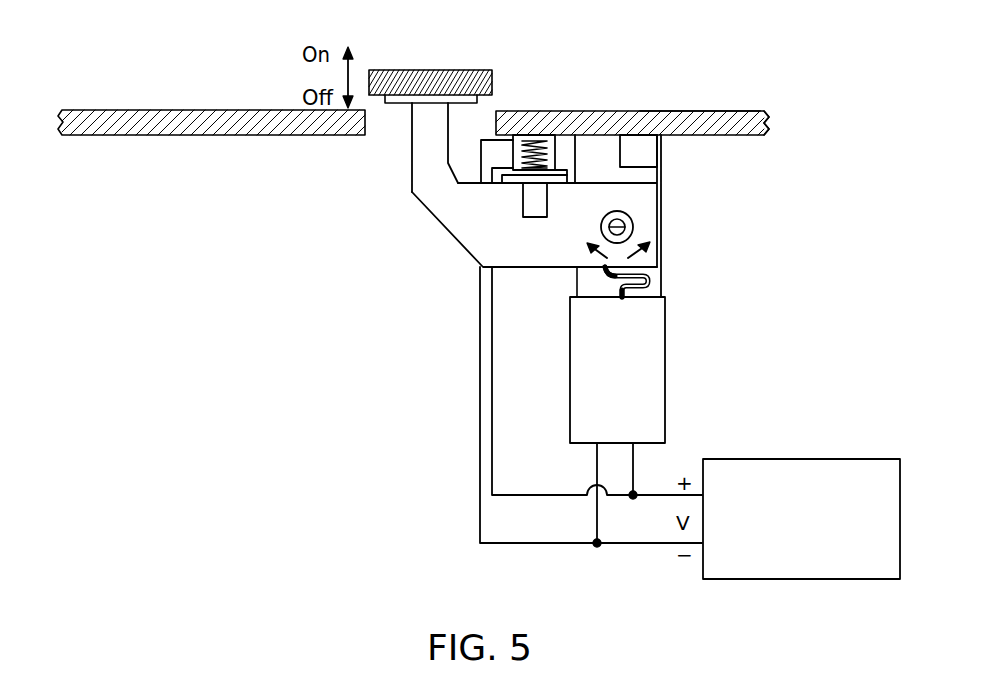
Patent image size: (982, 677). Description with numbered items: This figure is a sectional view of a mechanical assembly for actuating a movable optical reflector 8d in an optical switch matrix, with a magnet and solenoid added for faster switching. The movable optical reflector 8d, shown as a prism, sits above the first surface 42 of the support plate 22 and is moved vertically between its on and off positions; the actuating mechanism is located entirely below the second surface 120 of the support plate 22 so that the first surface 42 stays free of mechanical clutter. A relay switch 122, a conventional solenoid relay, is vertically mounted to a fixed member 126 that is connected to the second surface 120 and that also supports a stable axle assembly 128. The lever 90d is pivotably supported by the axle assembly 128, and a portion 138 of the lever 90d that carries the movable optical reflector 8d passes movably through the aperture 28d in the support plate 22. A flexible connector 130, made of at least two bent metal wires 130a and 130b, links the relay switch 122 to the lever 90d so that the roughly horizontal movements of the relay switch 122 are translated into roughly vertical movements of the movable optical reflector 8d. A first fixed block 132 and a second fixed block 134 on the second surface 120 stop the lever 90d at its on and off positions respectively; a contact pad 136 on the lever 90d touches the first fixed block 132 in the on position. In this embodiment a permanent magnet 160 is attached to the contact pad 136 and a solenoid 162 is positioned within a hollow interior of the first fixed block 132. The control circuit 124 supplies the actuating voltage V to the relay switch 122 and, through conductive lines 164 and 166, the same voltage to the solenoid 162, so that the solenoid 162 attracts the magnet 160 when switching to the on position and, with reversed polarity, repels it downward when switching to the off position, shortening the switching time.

The movable optical reflector 8d is at (438, 70).
The aperture 28d is at (390, 132).
The portion of the lever 138 is at (428, 170).
The lever 90d is at (470, 232).
The first surface 42 is at (597, 110).
The support plate 22 is at (660, 112).
The second surface 120 is at (740, 137).
The fixed member 126 is at (642, 177).
The first fixed block 132 is at (551, 155).
The solenoid 162 is at (537, 140).
The contact pad 136 is at (558, 180).
The magnet 160 is at (533, 208).
The second fixed block 134 is at (645, 152).
The axle assembly 128 is at (633, 227).
The flexible connector 130 is at (657, 277).
The bent metal wire 130a is at (655, 286).
The bent metal wire 130b is at (607, 273).
The relay switch 122 is at (657, 373).
The control circuit 124 is at (797, 473).
The conductive line 164 is at (520, 493).
The conductive line 166 is at (527, 545).